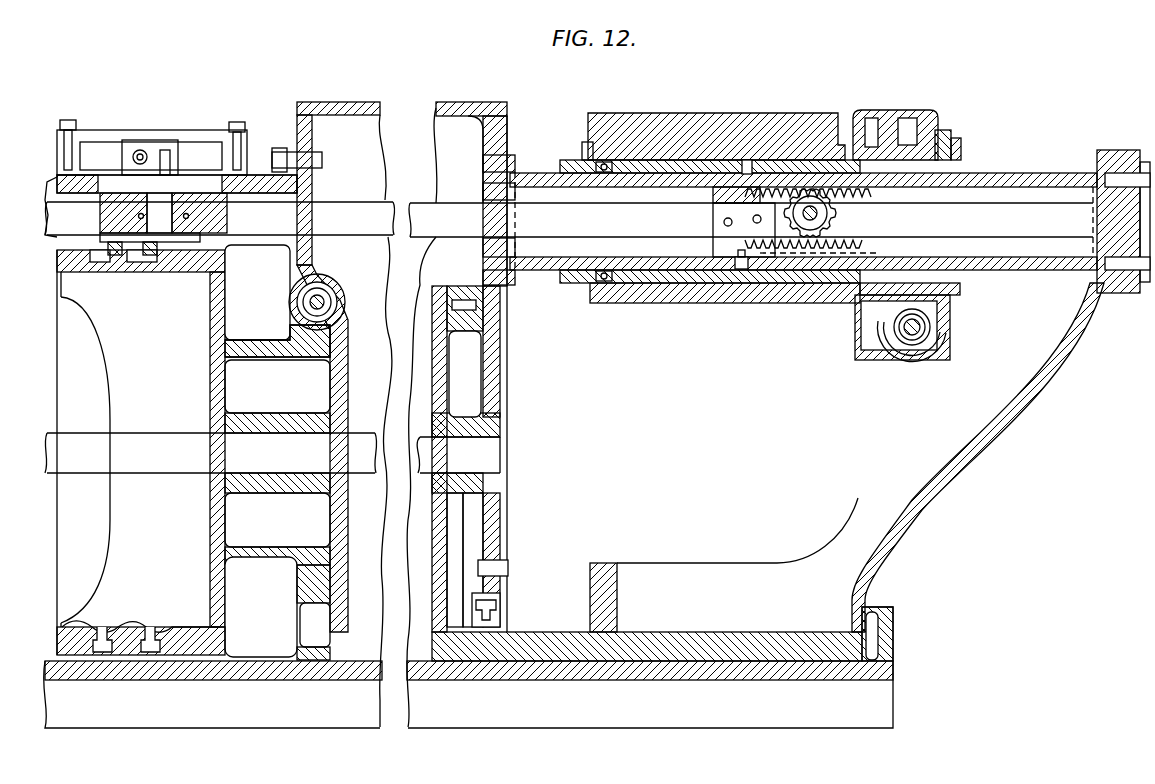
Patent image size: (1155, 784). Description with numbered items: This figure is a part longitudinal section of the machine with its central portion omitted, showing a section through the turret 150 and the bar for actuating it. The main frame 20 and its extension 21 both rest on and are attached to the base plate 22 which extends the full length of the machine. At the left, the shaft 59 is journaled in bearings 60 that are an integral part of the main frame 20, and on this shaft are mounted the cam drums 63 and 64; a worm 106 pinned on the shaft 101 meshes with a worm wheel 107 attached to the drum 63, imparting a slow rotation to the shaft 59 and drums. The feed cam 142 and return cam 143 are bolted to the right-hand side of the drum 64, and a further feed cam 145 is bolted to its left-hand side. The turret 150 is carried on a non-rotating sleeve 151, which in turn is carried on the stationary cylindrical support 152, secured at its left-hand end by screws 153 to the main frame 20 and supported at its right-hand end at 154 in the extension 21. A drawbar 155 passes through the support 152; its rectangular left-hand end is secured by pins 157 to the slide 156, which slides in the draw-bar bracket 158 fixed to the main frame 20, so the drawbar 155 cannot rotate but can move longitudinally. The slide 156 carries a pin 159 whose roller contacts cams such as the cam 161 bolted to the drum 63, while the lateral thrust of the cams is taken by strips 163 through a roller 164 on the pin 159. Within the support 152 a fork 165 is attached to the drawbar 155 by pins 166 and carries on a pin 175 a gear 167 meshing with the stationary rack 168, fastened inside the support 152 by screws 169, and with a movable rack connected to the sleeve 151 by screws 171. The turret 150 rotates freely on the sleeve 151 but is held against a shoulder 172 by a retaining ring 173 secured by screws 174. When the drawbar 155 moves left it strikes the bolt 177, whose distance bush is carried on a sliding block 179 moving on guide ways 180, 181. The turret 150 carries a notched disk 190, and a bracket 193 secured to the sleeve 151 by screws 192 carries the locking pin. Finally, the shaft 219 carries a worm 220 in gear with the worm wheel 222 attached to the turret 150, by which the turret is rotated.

The main frame 20 is at (348, 102).
The extension to the main frame 21 is at (897, 512).
The base plate 22 is at (893, 660).
The shaft 59 is at (272, 453).
The bearings 60 is at (312, 413).
The drum 63 is at (150, 627).
The drum 64 is at (490, 505).
The shaft 101 is at (310, 302).
The worm 106 is at (300, 288).
The worm wheel 107 is at (304, 337).
The feed cam 142 is at (500, 383).
The return cam 143 is at (500, 537).
The feed cam 145 is at (468, 290).
The turret 150 is at (718, 118).
The non-rotating sleeve 151 is at (650, 165).
The stationary cylindrical support 152 is at (530, 178).
The screws 153 is at (512, 160).
The right-hand support 154 is at (1118, 150).
The drawbar 155 is at (569, 222).
The slide 156 is at (185, 200).
The pins 157 is at (190, 213).
The draw-bar bracket 158 is at (260, 180).
The pin 159 is at (110, 210).
The cam 161 is at (200, 238).
The strips 163 is at (82, 238).
The roller 164 is at (108, 248).
The fork 165 is at (713, 196).
The pins 166 is at (754, 222).
The gear 167 is at (830, 212).
The stationary rack 168 is at (862, 245).
The screws 169 is at (745, 270).
The screws 171 is at (845, 122).
The shoulder 172 is at (945, 132).
The retaining ring 173 is at (587, 142).
The screws 174 is at (596, 166).
The pin 175 is at (820, 217).
The bolt or pin 177 is at (165, 150).
The sliding block 179 is at (140, 150).
The guide way 180 is at (110, 135).
The guide way 181 is at (87, 165).
The disk 190 is at (900, 125).
The screws 192 is at (962, 150).
The bracket 193 is at (922, 290).
The shaft 219 is at (930, 329).
The worm 220 is at (935, 344).
The worm wheel 222 is at (920, 306).